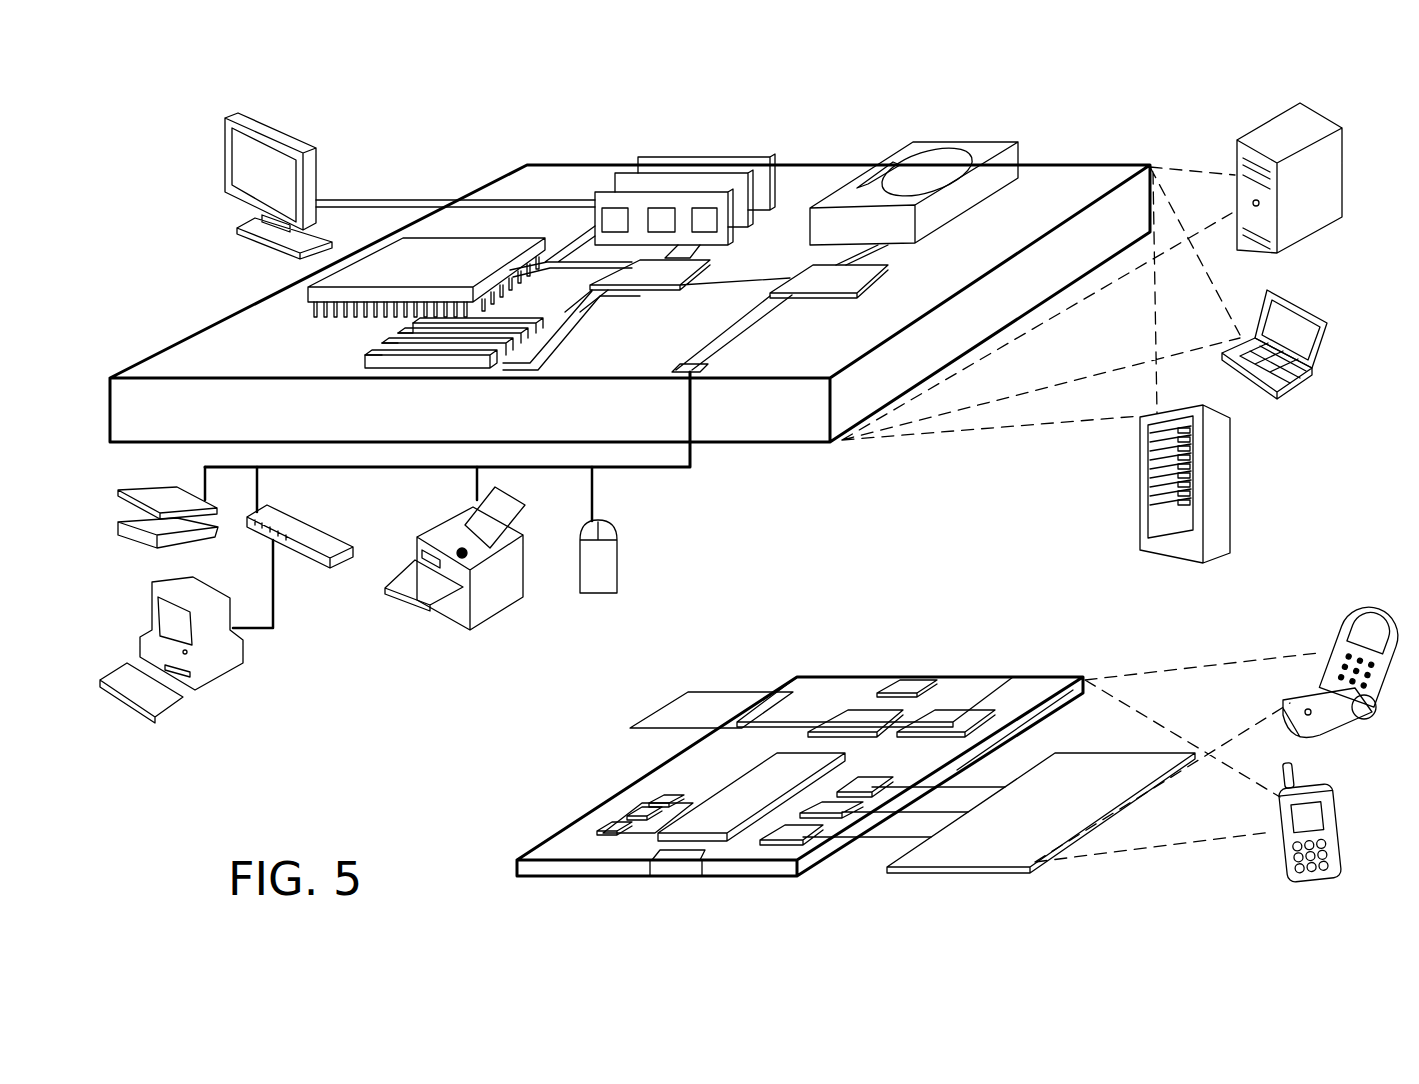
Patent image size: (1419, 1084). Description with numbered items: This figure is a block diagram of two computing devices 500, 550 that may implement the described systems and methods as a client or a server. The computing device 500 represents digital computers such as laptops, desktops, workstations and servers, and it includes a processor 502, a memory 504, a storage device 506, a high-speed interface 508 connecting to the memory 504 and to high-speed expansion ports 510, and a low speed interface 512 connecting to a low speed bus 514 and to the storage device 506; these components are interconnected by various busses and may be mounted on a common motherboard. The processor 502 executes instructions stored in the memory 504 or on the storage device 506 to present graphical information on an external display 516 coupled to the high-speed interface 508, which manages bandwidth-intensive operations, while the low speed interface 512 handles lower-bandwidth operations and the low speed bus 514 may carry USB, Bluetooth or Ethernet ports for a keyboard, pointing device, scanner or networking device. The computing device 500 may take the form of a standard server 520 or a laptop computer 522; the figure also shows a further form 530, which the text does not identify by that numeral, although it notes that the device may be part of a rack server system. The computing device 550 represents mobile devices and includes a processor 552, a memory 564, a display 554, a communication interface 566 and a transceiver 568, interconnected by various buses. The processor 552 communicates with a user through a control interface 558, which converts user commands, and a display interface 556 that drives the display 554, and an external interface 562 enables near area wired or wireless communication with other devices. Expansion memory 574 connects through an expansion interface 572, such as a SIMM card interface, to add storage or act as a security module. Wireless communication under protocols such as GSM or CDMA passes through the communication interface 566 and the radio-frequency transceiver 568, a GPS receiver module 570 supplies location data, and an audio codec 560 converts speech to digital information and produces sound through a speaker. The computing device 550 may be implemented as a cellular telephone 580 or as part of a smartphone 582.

The computing device 500 is at (492, 136).
The processor 502 is at (304, 298).
The memory 504 is at (670, 157).
The storage device 506 is at (916, 142).
The high-speed interface 508 is at (655, 273).
The high-speed expansion ports 510 is at (1285, 389).
The low speed interface 512 is at (812, 275).
The low speed bus 514 is at (696, 378).
The display 516 is at (243, 114).
The standard server 520 is at (1253, 128).
The laptop computer 522 is at (383, 342).
The server 530 is at (1140, 524).
The computing device 550 is at (600, 743).
The processor 552 is at (727, 820).
The display 554 is at (1006, 838).
The display interface 556 is at (785, 842).
The control interface 558 is at (830, 814).
The audio codec 560 is at (877, 794).
The external interface 562 is at (672, 872).
The memory 564 is at (612, 823).
The communication interface 566 is at (852, 715).
The transceiver 568 is at (955, 718).
The GPS receiver module 570 is at (917, 688).
The expansion interface 572 is at (782, 690).
The expansion memory 574 is at (670, 693).
The cellular telephone 580 is at (1345, 633).
The smartphone 582 is at (1284, 832).